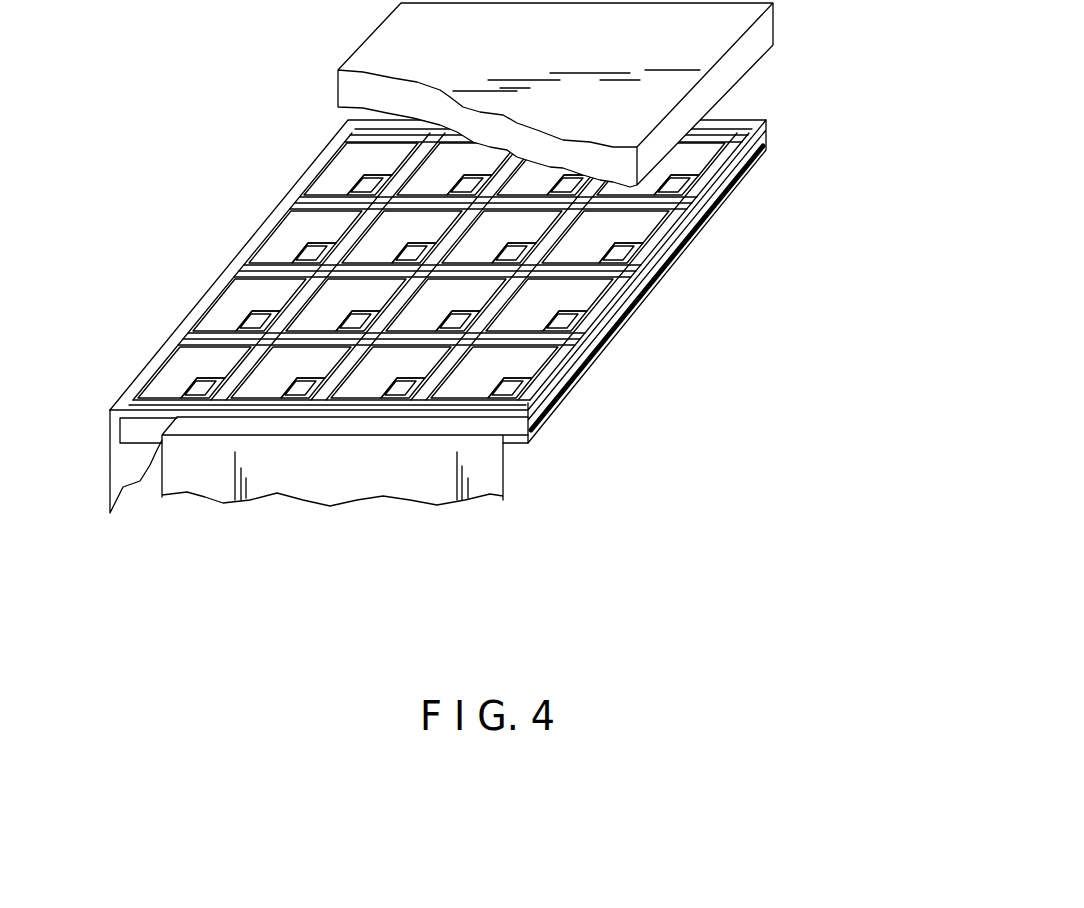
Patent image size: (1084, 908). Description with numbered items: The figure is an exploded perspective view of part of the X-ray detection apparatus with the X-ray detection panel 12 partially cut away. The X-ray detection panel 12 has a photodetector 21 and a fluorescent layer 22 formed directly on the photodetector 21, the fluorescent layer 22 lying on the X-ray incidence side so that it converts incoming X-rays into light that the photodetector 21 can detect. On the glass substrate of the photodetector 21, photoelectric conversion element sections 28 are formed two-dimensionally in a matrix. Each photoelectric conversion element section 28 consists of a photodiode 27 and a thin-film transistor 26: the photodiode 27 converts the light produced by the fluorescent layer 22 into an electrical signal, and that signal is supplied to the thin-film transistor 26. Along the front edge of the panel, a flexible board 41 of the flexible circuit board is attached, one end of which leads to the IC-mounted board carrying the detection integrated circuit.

The X-ray detection panel 12 is at (485, 258).
The photodetector 21 is at (462, 305).
The fluorescent layer 22 is at (860, 128).
The thin-film transistor 26 is at (320, 253).
The photodiode 27 is at (300, 227).
The photoelectric conversion element section 28 is at (447, 270).
The flexible board 41 is at (288, 490).